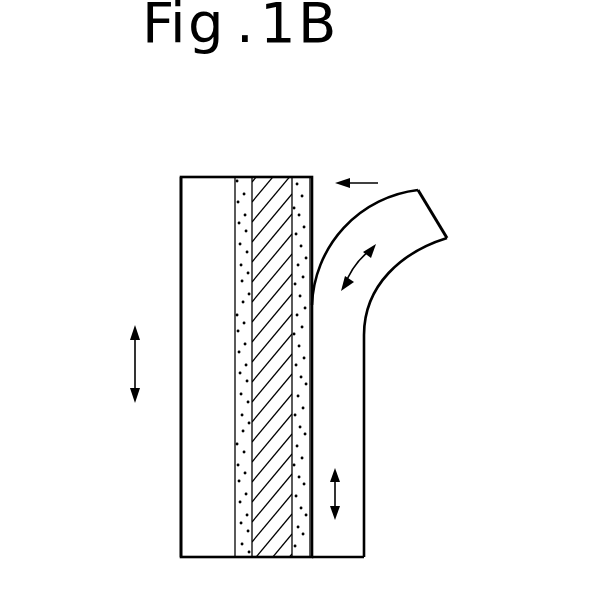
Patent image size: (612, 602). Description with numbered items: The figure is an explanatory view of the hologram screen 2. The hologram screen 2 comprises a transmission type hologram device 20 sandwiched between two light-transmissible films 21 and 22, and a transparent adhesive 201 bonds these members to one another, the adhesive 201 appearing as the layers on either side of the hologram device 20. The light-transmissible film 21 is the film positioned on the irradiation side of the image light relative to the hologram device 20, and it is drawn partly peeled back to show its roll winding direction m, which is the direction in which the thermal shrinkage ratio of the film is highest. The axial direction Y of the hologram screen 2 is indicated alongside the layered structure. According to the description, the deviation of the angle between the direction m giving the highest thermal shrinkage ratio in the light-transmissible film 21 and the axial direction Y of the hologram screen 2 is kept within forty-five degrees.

The hologram screen 2 is at (135, 219).
The hologram device 20 is at (271, 192).
The light-transmissible film 21 is at (342, 397).
The light-transmissible film 22 is at (202, 465).
The transparent adhesive 201 is at (243, 520).
The axial direction Y is at (134, 363).
The roll winding direction m is at (360, 262).